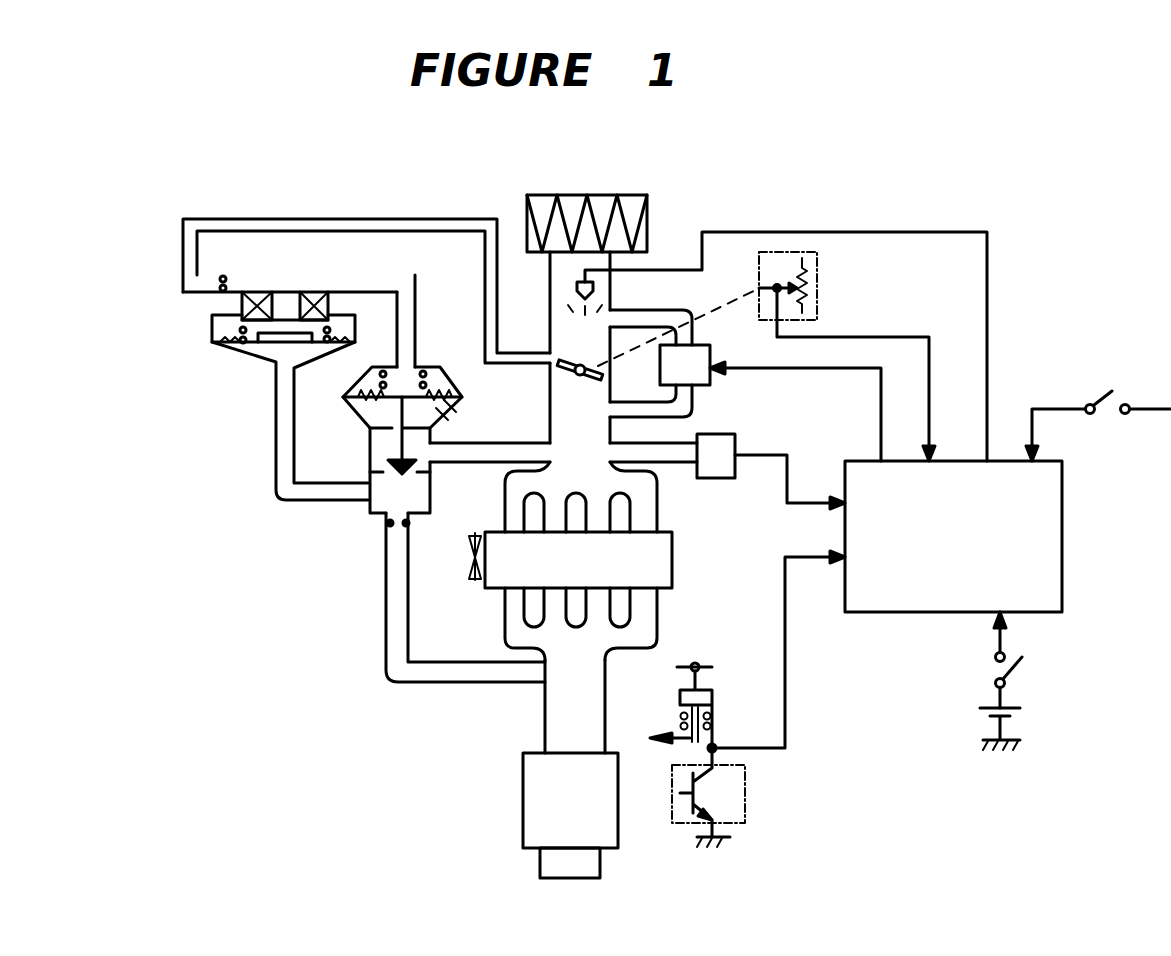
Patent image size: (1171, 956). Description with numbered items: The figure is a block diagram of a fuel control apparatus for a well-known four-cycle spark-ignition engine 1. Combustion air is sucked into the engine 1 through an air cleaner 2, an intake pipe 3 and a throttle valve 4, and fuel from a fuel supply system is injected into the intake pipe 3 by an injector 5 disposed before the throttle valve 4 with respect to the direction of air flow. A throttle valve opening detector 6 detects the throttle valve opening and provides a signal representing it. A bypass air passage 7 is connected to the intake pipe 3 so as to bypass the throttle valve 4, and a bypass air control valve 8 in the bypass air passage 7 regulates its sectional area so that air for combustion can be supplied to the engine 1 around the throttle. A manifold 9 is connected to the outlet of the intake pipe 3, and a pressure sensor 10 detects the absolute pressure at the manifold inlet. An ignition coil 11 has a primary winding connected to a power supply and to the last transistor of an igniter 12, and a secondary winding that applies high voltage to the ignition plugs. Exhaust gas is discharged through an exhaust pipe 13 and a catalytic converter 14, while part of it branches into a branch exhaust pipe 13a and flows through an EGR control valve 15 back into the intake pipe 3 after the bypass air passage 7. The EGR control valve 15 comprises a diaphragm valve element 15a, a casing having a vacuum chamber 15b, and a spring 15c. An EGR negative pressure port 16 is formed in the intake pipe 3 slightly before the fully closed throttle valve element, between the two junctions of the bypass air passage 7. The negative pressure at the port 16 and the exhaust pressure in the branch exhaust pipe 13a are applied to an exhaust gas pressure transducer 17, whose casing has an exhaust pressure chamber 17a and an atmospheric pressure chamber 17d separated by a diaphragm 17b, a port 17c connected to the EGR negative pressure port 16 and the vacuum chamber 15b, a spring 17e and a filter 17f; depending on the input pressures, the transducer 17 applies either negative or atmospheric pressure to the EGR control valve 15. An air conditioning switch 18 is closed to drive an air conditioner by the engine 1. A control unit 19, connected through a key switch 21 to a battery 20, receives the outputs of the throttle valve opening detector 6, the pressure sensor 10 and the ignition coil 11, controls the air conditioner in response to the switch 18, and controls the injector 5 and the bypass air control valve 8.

The engine 1 is at (672, 560).
The air cleaner 2 is at (586, 196).
The intake pipe 3 is at (550, 416).
The throttle valve 4 is at (600, 375).
The injector 5 is at (594, 290).
The throttle valve opening detector 6 is at (817, 260).
The bypass air passage 7 is at (693, 400).
The bypass air control valve 8 is at (709, 346).
The manifold 9 is at (651, 494).
The pressure sensor 10 is at (712, 480).
The ignition coil 11 is at (712, 692).
The igniter 12 is at (745, 797).
The exhaust pipe 13 is at (605, 723).
The branch exhaust pipe 13a is at (440, 683).
The catalytic converter 14 is at (523, 812).
The EGR control valve 15 is at (387, 409).
The diaphragm valve element 15a is at (372, 452).
The vacuum chamber 15b is at (458, 397).
The spring 15c is at (424, 366).
The EGR negative pressure port 16 is at (545, 362).
The exhaust gas pressure transducer 17 is at (230, 388).
The exhaust pressure chamber 17a is at (280, 362).
The diaphragm 17b is at (253, 345).
The port 17c is at (296, 345).
The atmospheric pressure chamber 17d is at (230, 345).
The spring 17e is at (243, 330).
The filter 17f is at (242, 305).
The air conditioning switch 18 is at (1100, 396).
The control unit 19 is at (900, 612).
The battery 20 is at (1012, 716).
The key switch 21 is at (1022, 660).